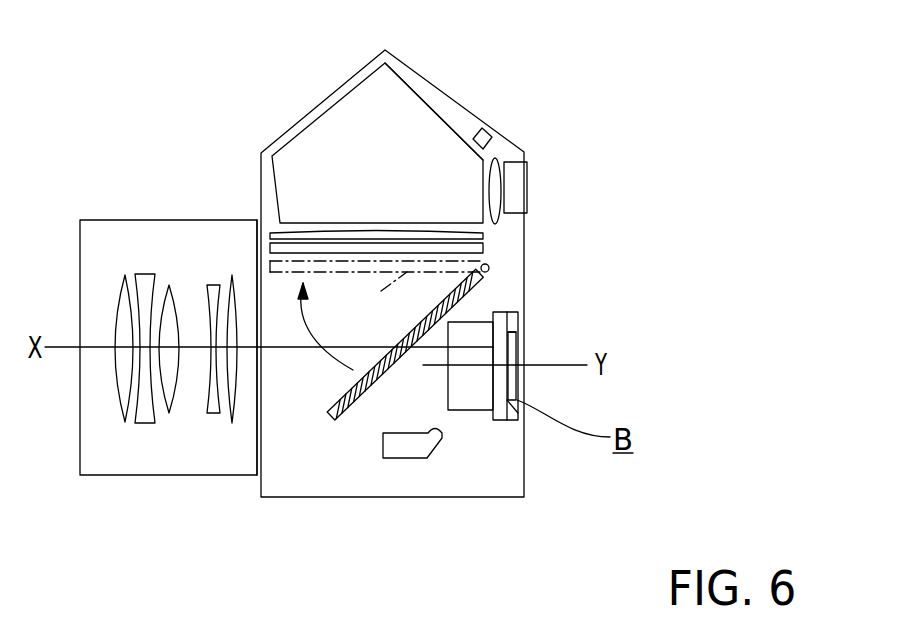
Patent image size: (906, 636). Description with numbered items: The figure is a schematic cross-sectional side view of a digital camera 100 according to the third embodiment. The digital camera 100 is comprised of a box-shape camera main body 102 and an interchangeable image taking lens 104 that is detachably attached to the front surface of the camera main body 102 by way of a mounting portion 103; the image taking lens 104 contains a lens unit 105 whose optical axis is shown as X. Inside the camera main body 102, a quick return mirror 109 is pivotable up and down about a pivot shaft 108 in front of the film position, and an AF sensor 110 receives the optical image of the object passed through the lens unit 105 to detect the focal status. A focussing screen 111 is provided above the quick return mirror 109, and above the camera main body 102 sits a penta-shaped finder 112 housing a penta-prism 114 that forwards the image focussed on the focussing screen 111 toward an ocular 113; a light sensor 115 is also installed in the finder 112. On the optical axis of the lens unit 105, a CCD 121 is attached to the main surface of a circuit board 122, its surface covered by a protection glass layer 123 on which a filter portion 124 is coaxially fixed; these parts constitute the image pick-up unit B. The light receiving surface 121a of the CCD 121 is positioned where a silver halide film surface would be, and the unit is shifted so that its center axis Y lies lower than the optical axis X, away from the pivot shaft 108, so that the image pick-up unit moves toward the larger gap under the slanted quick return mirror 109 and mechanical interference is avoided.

The digital camera 100 is at (242, 130).
The camera main body 102 is at (528, 230).
The mounting portion 103 is at (257, 438).
The image taking lens 104 is at (118, 220).
The lens unit 105 is at (118, 412).
The pivot shaft 108 is at (490, 266).
The quick return mirror 109 is at (445, 363).
The AF sensor 110 is at (405, 453).
The focussing screen 111 is at (290, 250).
The penta-shaped finder 112 is at (403, 63).
The ocular 113 is at (497, 185).
The penta-prism 114 is at (412, 103).
The light sensor 115 is at (488, 128).
The CCD 121 is at (517, 389).
The light receiving surface 121a is at (512, 337).
The circuit board 122 is at (517, 413).
The protection glass layer 123 is at (498, 420).
The filter portion 124 is at (472, 410).